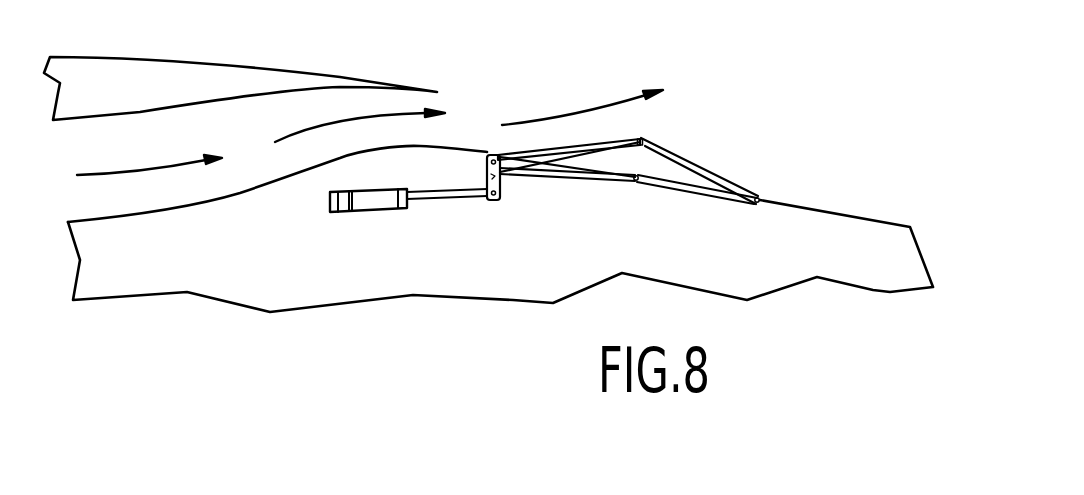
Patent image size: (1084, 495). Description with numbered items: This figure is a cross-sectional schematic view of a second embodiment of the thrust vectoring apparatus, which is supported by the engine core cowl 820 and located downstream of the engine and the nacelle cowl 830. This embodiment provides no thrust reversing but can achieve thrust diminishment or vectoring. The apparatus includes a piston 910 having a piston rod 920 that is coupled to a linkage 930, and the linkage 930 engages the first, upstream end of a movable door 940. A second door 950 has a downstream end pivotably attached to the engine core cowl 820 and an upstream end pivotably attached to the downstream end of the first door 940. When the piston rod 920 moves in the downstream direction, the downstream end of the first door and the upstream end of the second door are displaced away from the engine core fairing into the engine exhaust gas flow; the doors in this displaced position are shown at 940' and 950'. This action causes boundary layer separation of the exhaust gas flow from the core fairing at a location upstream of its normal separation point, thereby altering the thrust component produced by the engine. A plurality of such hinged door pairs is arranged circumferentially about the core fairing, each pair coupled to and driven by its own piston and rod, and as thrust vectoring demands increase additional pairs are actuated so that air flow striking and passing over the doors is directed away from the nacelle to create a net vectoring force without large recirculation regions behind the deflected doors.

The engine core cowl 820 is at (801, 203).
The nacelle cowl 830 is at (405, 87).
The piston 910 is at (331, 202).
The piston rod 920 is at (453, 198).
The linkage 930 is at (500, 180).
The movable door 940 is at (569, 195).
The displaced position of movable door 940' is at (570, 98).
The second door 950 is at (698, 220).
The displaced position of second door 950' is at (699, 134).